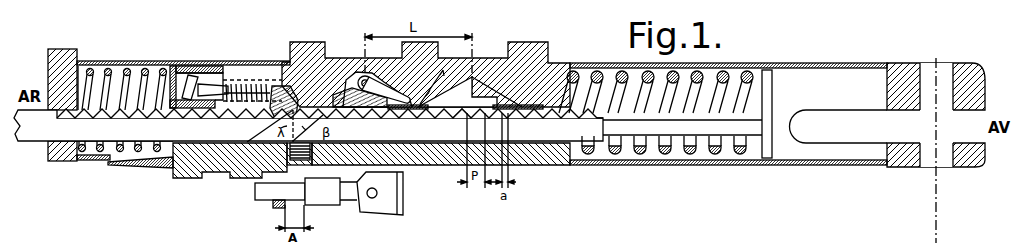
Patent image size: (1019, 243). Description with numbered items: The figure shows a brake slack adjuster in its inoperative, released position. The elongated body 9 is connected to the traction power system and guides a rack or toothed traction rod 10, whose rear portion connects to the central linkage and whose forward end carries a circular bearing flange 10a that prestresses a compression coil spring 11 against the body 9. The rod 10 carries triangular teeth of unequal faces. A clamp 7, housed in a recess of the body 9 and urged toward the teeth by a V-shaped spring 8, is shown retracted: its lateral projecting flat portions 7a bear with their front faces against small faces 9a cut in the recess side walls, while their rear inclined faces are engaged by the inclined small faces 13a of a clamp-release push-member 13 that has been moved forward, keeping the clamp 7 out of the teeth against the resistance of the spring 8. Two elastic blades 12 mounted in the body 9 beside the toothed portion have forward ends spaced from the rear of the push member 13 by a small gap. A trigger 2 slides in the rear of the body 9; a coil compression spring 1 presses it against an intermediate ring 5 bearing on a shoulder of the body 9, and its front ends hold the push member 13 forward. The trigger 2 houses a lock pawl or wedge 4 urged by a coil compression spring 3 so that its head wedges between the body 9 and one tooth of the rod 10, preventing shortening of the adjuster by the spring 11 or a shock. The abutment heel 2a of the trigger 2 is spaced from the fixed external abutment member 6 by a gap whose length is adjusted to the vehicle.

The coil compression spring 1 is at (107, 70).
The trigger 2 is at (190, 67).
The abutment heel 2a is at (277, 181).
The coil compression spring 3 is at (250, 86).
The released-brake wedge 4 is at (280, 84).
The intermediate ring 5 is at (287, 150).
The fixed external abutment member 6 is at (352, 205).
The clamp 7 is at (345, 88).
The projecting flat portions 7a is at (478, 85).
The V-shaped spring 8 is at (405, 104).
The body 9 is at (515, 161).
The small faces 9a is at (382, 108).
The toothed traction rod 10 is at (553, 136).
The circular bearing flange 10a is at (772, 95).
The compression coil spring 11 is at (639, 152).
The elastic blades 12 is at (248, 110).
The clamp-release push-member 13 is at (410, 112).
The small faces 13a is at (465, 113).